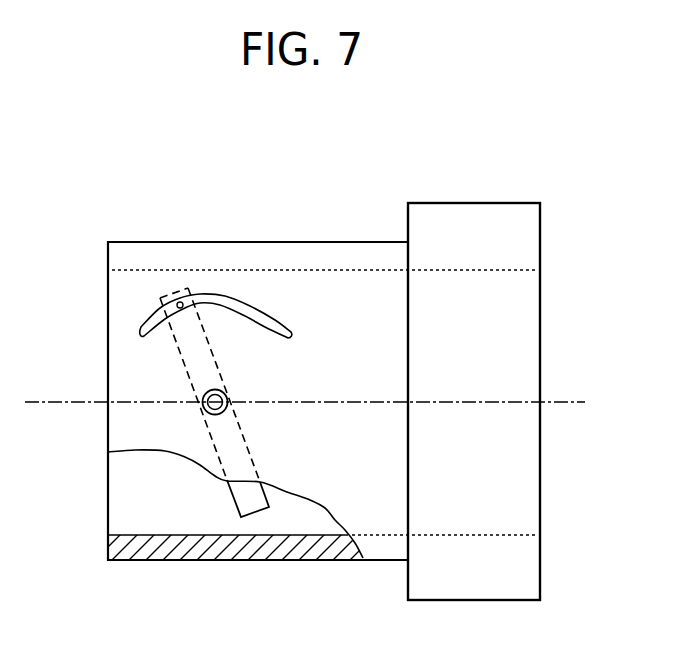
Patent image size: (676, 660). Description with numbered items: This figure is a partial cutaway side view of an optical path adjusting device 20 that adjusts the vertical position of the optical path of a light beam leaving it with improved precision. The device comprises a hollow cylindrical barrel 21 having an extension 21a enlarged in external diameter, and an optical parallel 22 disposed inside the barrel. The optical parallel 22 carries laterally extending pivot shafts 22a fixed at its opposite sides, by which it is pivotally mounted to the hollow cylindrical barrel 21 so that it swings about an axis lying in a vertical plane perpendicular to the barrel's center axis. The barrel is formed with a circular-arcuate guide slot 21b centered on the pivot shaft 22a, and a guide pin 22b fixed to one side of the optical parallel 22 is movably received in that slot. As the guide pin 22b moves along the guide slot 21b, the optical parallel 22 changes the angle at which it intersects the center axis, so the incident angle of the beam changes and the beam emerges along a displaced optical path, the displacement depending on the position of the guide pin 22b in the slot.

The optical path adjusting device 20 is at (204, 232).
The hollow cylindrical barrel 21 is at (290, 242).
The extension 21a is at (541, 225).
The circular-arcuate guide slot 21b is at (140, 328).
The optical parallel 22 is at (229, 497).
The pivot shaft 22a is at (229, 410).
The guide pin 22b is at (186, 309).